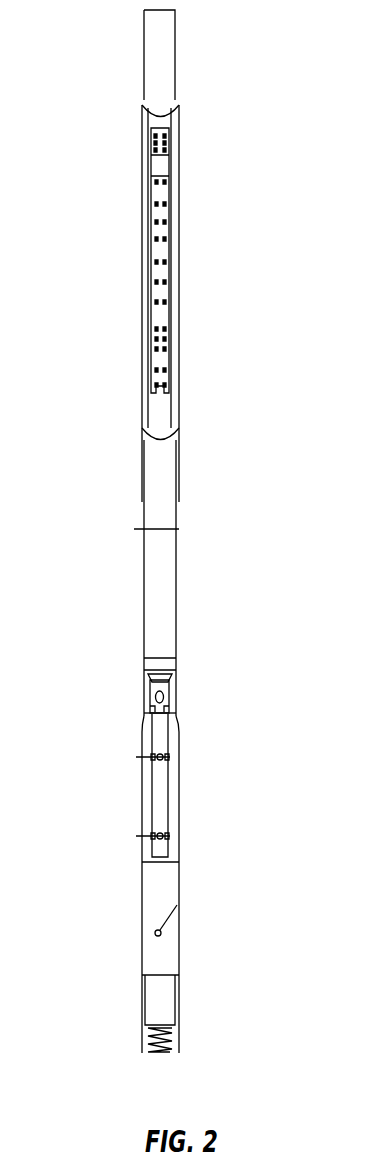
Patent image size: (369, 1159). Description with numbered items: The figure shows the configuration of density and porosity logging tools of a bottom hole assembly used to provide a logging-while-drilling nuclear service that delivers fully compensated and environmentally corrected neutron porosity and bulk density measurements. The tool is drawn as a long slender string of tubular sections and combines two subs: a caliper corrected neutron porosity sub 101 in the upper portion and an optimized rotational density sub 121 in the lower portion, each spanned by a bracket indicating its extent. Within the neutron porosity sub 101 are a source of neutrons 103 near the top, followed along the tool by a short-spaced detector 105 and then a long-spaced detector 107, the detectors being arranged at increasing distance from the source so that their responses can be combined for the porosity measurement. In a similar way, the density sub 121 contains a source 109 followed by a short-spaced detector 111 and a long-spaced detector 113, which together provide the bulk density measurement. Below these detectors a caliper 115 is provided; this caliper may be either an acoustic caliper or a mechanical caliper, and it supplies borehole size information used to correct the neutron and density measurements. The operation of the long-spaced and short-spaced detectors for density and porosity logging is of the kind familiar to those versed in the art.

The caliper corrected neutron (CCN) porosity sub 101 is at (179, 410).
The source of neutrons 103 is at (141, 153).
The short-spaced (SS) detector 105 is at (117, 277).
The long-spaced (LS) detector 107 is at (141, 283).
The source 109 is at (146, 693).
The short-spaced (SS) detector 111 is at (143, 740).
The long-spaced (LS) detector 113 is at (143, 826).
The caliper 115 is at (155, 932).
The optimized rotational density (ORD) sub 121 is at (179, 829).